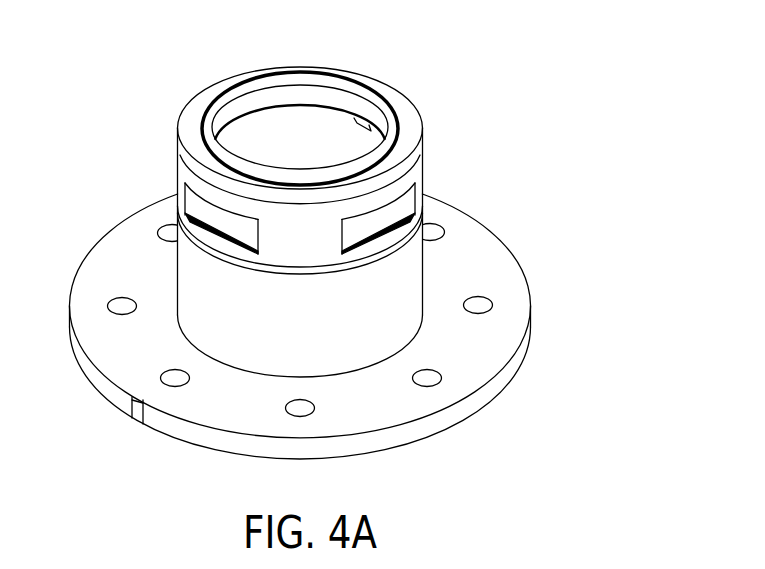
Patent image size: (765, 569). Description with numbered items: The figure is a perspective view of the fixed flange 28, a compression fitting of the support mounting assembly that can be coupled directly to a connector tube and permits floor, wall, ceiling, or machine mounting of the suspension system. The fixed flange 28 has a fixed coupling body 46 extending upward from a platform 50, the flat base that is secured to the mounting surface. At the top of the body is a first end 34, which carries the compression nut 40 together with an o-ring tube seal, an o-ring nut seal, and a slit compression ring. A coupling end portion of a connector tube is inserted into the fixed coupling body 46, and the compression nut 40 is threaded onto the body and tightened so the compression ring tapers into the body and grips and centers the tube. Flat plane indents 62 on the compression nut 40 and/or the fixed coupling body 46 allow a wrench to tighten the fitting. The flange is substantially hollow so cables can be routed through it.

The fixed flange 28 is at (299, 235).
The first end 34 is at (305, 165).
The compression nut 40 is at (190, 138).
The fixed coupling body 46 is at (187, 280).
The platform 50 is at (119, 353).
The flat plane indents 62 is at (400, 202).